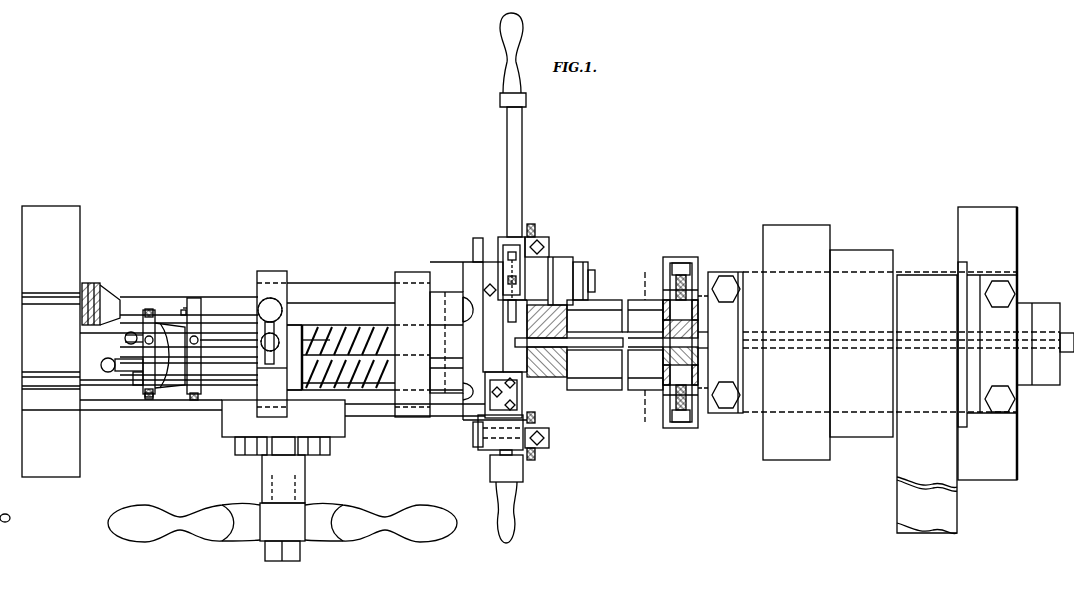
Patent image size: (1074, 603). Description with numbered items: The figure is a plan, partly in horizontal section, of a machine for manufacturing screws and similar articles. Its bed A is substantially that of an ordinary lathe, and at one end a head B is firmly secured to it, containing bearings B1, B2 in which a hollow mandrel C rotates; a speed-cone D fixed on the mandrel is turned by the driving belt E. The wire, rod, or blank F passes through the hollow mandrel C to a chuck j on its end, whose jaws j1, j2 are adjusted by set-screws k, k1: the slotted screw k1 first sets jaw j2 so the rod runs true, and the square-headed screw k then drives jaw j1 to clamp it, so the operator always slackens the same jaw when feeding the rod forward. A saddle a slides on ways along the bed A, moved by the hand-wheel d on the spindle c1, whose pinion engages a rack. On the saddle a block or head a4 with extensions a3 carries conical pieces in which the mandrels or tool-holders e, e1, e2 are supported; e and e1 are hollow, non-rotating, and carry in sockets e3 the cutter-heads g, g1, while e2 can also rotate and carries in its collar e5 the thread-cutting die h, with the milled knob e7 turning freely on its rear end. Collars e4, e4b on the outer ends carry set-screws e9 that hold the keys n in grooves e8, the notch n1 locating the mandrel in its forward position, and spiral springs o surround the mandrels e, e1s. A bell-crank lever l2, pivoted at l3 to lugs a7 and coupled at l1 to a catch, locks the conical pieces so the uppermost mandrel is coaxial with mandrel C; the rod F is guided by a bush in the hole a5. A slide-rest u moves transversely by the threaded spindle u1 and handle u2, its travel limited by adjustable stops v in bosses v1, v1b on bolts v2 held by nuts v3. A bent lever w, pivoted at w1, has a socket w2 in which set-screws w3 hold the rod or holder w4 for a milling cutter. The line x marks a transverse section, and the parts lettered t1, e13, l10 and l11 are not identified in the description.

The milled head or knob e7 is at (92, 284).
The mandrel or tool-holder e2 is at (189, 310).
The notch n1 is at (169, 338).
The screw-threaded spindle u1 is at (258, 340).
The keyway or groove e8 is at (170, 371).
The mandrel or tool-holder e is at (265, 357).
The collar e4b is at (189, 367).
The strip or key n is at (125, 338).
The mandrel or tool-holder e1 is at (157, 353).
The collar e4 is at (200, 312).
The sleeve t1 is at (192, 300).
The pin e13 is at (185, 306).
The set-screws e9 is at (181, 312).
The lugs a7 is at (304, 310).
The bent or bell-crank lever l2 is at (262, 302).
The pivot l3 is at (283, 306).
The coupling l1 is at (253, 343).
The bar l10 is at (272, 377).
The bar l11 is at (316, 339).
The movable head or saddle a is at (341, 346).
The mandrel or tool-holder e1s is at (347, 357).
The spiral springs o is at (352, 385).
The extensions a3 is at (346, 344).
The block or head a4 is at (282, 427).
The spindle c1 is at (283, 470).
The hand-wheel d is at (282, 532).
The collar or enlargement e5 is at (456, 327).
The hollow collars or sockets e3 is at (446, 357).
The die h is at (469, 303).
The cutter-head g1 is at (470, 396).
The cutter-head g is at (495, 341).
The slide-rest u is at (580, 346).
The set-screws w3 is at (517, 258).
The rod, bar, or holder w4 is at (517, 280).
The bent arm or lever w is at (515, 162).
The nuts v3 is at (473, 246).
The adjustable stops v is at (535, 229).
The heads or bosses v1 is at (549, 247).
The pivot w1 is at (571, 273).
The head or boss v1b is at (527, 306).
The hole a5 is at (567, 320).
The handle u2 is at (594, 370).
The wire, rod, or blank F is at (620, 353).
The bed A is at (645, 345).
The section line x is at (642, 348).
The chuck j is at (697, 262).
The set-screw k1 is at (684, 266).
The set-screw k is at (682, 422).
The jaw j2 is at (680, 322).
The jaw j1 is at (680, 361).
The head B is at (727, 342).
The bearings B1 is at (879, 331).
The speed-cone D is at (880, 342).
The driving belt or band E is at (927, 404).
The bearing B2 is at (987, 343).
The hollow mandrel C is at (1045, 344).
The bolts or spindles v2 is at (478, 447).
The socket w2 is at (506, 496).